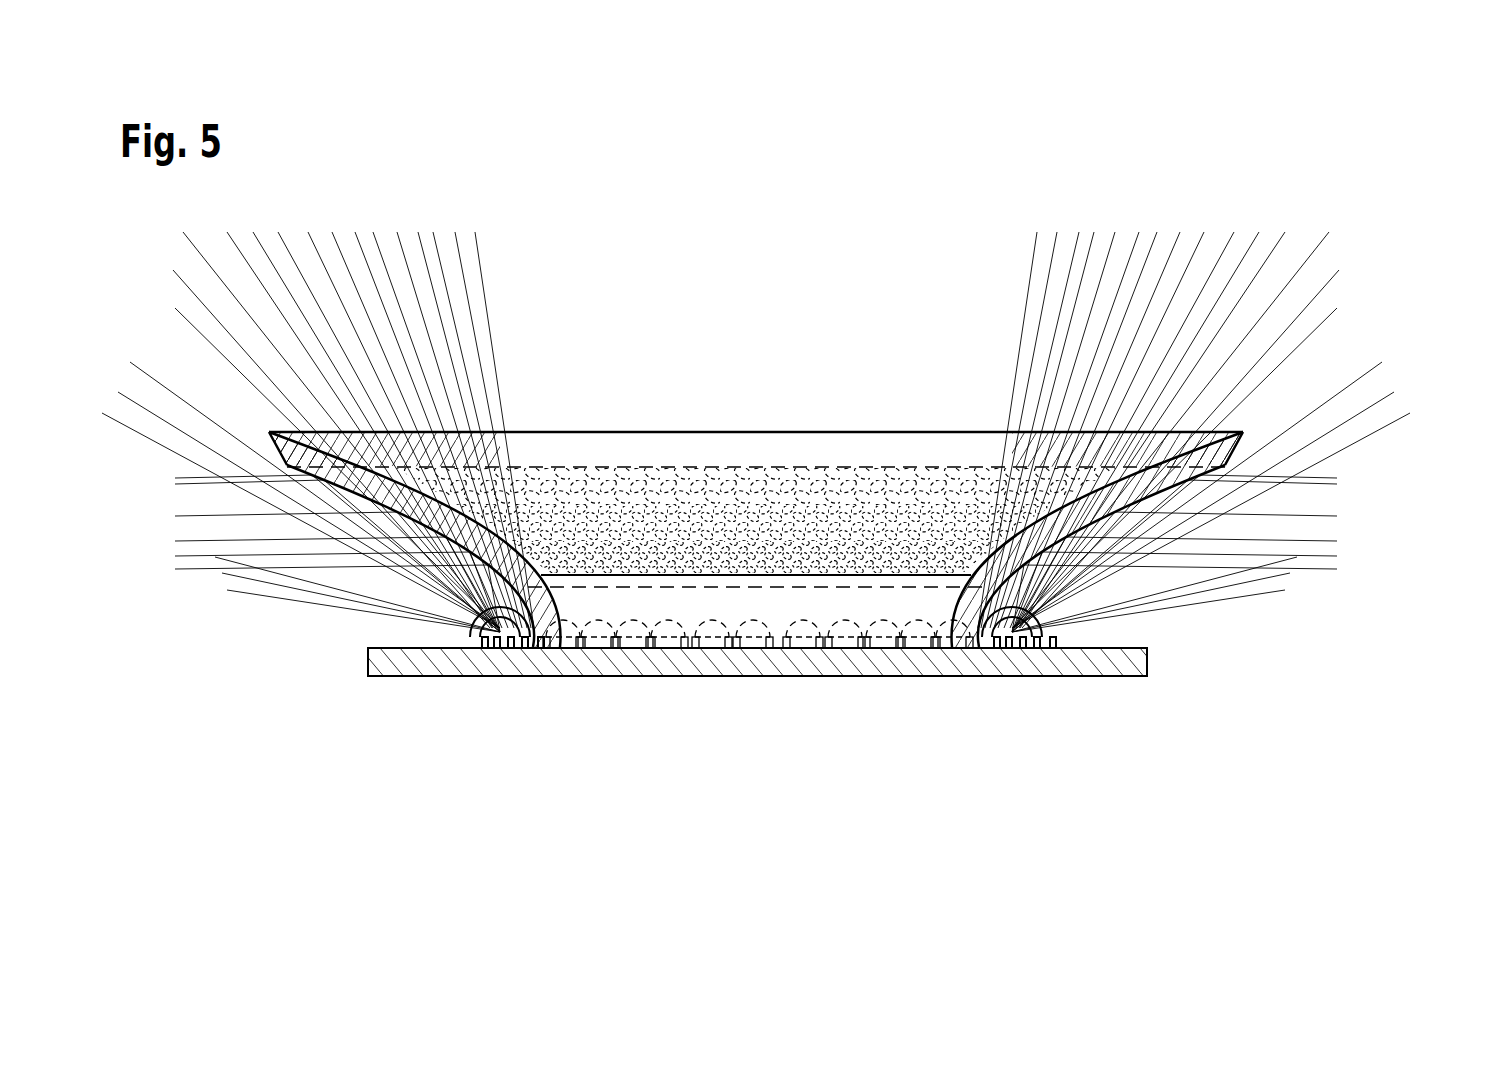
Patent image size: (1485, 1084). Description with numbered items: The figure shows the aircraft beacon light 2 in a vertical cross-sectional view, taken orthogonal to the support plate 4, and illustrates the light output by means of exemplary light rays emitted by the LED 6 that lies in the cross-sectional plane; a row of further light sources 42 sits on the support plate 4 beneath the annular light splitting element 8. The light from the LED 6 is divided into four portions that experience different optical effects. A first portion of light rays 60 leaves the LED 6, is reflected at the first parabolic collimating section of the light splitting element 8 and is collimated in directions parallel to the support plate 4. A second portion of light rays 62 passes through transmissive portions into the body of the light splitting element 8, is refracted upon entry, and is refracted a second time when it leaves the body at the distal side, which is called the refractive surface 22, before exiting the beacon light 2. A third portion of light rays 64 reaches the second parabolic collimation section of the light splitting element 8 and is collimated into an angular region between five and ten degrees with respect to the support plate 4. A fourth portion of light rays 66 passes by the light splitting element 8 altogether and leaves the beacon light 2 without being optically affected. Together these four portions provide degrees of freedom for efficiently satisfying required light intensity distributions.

The aircraft beacon light 2 is at (196, 612).
The support plate 4 is at (1123, 662).
The LED 6 is at (1008, 648).
The annular light splitting element 8 is at (850, 428).
The refractive surface 22 is at (1222, 432).
The LED row 42 is at (757, 647).
The first portion of light rays 60 is at (1358, 472).
The second portion of light rays 62 is at (1027, 199).
The third portion of light rays 64 is at (1303, 543).
The fourth portion of light rays 66 is at (1393, 352).